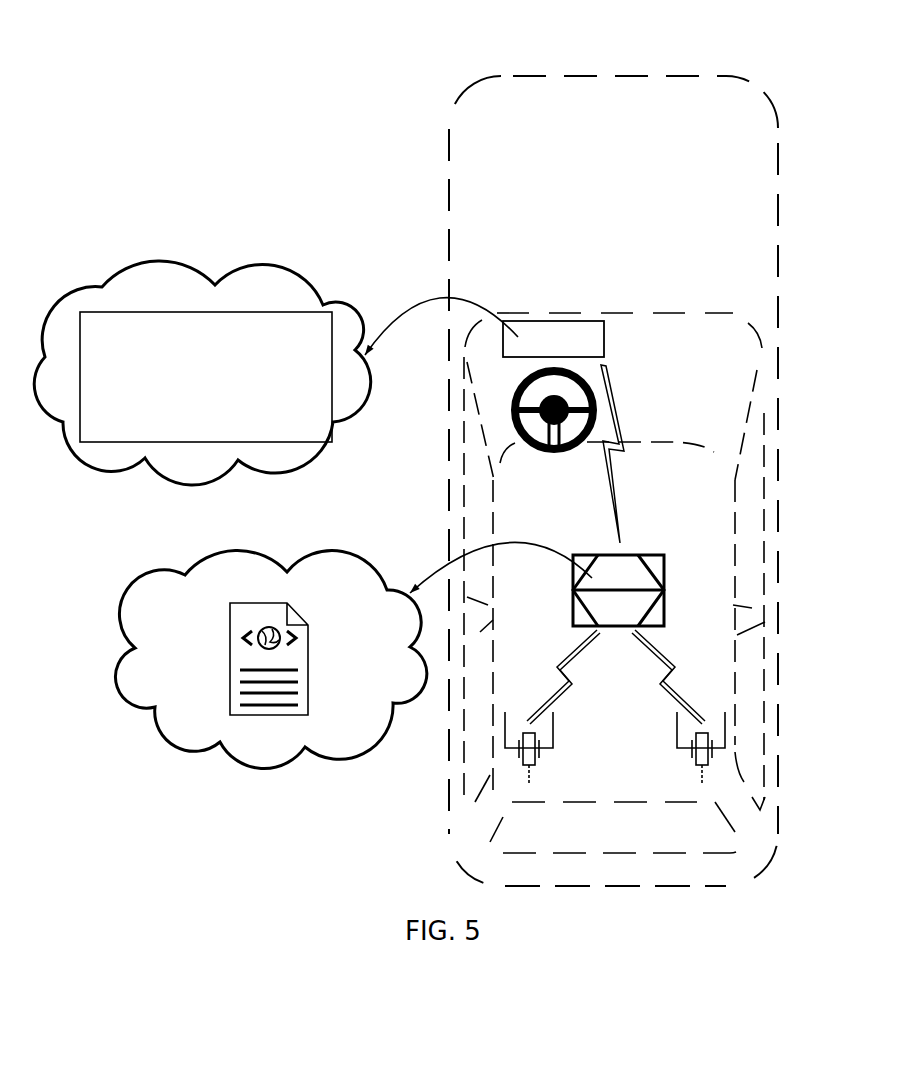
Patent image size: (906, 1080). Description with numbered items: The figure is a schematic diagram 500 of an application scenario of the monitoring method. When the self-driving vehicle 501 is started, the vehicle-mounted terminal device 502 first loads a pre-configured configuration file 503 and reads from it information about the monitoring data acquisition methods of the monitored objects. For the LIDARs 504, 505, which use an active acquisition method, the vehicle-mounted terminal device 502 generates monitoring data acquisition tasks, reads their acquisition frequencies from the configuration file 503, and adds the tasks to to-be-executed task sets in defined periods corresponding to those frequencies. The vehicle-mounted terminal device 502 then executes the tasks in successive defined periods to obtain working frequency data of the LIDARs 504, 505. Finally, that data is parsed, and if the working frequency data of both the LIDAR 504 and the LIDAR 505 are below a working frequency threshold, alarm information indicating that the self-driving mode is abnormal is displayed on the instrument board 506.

The schematic diagram 500 is at (733, 38).
The self-driving vehicle 501 is at (780, 148).
The vehicle-mounted terminal device 502 is at (637, 555).
The configuration file 503 is at (310, 647).
The LIDAR 504 is at (553, 735).
The LIDAR 505 is at (725, 718).
The instrument board 506 is at (308, 313).